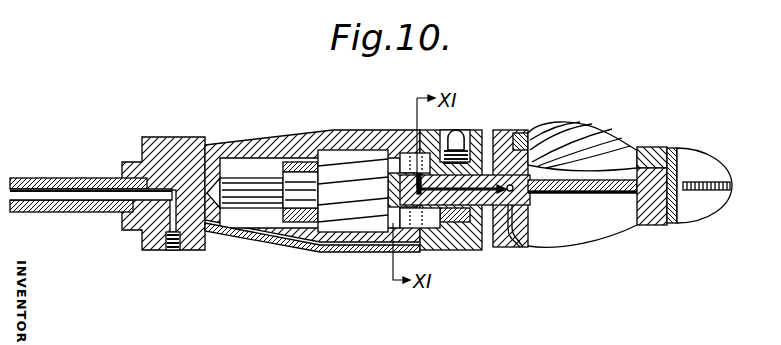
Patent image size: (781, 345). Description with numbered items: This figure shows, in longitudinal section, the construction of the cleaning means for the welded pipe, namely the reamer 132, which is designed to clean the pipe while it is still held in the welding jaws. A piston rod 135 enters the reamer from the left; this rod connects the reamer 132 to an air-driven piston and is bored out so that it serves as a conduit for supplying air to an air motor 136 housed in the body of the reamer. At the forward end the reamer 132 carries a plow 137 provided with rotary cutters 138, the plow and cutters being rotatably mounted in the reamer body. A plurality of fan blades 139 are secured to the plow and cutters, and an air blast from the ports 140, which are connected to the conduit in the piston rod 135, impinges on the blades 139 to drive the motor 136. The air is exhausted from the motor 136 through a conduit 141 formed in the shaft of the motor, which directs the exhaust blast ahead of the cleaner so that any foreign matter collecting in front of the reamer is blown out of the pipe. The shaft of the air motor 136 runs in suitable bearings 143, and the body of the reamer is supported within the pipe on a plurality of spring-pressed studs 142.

The reamer 132 is at (531, 245).
The piston rod 135 is at (63, 170).
The air motor 136 is at (347, 150).
The plow 137 is at (705, 167).
The rotary cutters 138 is at (608, 123).
The fan blades 139 is at (360, 188).
The ports 140 is at (344, 247).
The exhaust conduit 141 is at (511, 145).
The spring-pressed studs 142 is at (468, 114).
The bearings 143 is at (300, 162).